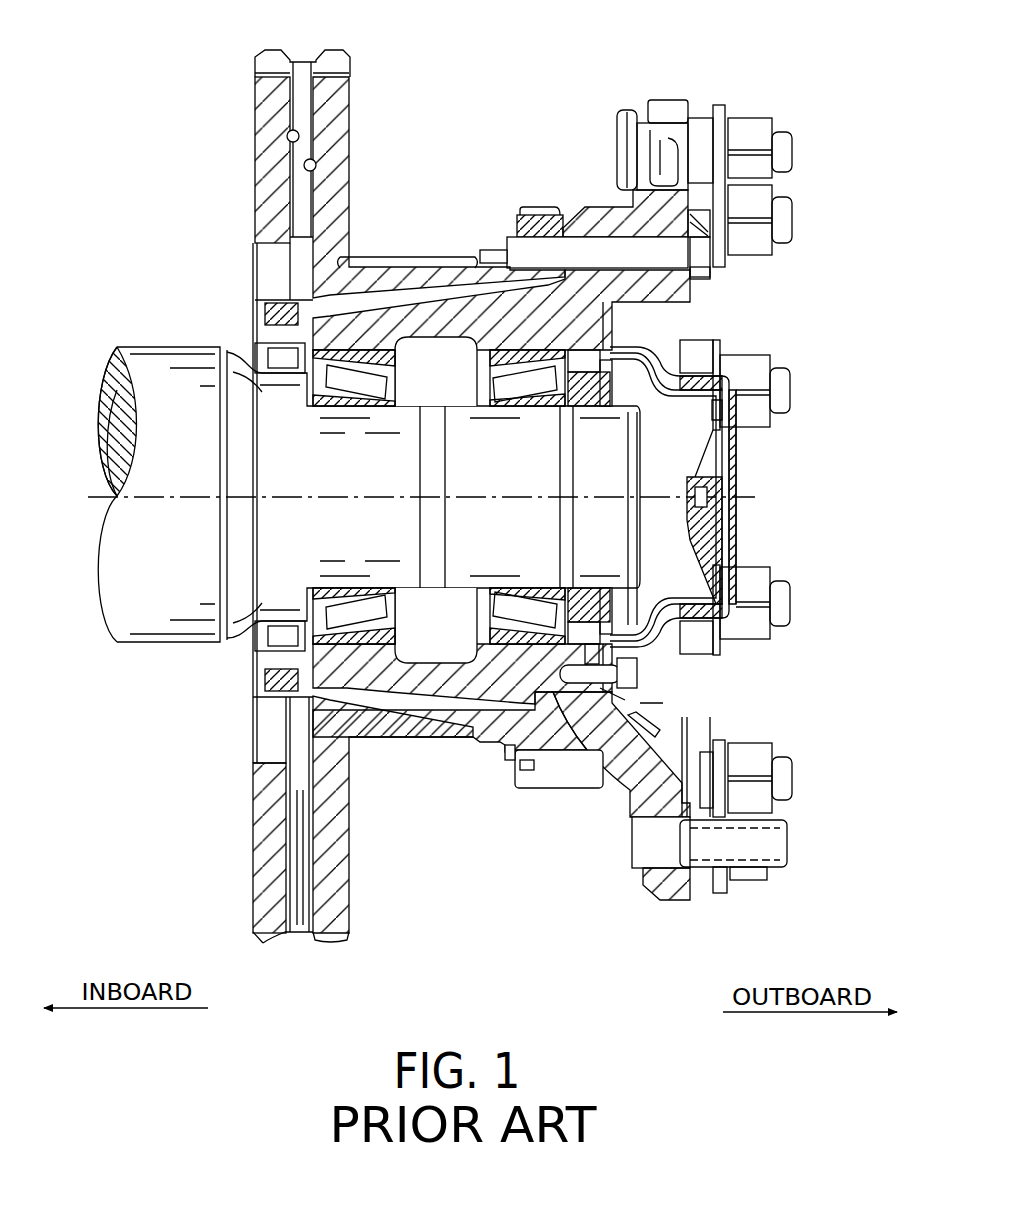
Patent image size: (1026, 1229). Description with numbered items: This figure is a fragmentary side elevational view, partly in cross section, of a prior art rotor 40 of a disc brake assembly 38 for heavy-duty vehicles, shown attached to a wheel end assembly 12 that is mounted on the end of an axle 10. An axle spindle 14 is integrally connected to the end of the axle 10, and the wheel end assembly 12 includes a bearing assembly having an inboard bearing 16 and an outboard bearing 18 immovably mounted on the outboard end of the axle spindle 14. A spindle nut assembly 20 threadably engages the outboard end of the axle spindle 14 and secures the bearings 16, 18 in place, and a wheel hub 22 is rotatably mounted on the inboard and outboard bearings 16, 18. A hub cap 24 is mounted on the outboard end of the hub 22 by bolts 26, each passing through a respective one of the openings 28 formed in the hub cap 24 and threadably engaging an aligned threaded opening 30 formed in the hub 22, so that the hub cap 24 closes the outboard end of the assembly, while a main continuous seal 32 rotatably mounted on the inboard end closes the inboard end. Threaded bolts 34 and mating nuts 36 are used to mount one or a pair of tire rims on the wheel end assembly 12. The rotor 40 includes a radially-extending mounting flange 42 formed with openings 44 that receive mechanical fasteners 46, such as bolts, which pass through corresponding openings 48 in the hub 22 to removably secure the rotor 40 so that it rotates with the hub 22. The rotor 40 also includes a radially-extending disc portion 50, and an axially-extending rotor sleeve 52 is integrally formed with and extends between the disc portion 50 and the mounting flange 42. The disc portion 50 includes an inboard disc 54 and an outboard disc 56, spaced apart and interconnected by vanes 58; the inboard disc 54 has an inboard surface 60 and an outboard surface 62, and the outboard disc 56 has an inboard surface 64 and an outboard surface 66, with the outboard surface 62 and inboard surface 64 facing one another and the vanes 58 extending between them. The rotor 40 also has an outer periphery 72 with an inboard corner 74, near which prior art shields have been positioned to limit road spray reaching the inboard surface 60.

The axle 10 is at (448, 493).
The wheel end assembly 12 is at (511, 479).
The axle spindle 14 is at (138, 346).
The inboard bearing 16 is at (360, 340).
The outboard bearing 18 is at (490, 337).
The spindle nut assembly 20 is at (622, 392).
The wheel hub 22 is at (692, 93).
The hub cap 24 is at (740, 543).
The bolts 26 is at (637, 673).
The openings 28 is at (630, 678).
The threaded openings 30 is at (593, 680).
The main continuous seal 32 is at (262, 653).
The threaded bolts 34 is at (705, 123).
The nuts 36 is at (757, 118).
The disc brake assembly 38 is at (418, 823).
The rotor 40 is at (358, 499).
The mounting flange 42 is at (548, 210).
The openings 44 is at (533, 248).
The mechanical fasteners 46 is at (717, 280).
The openings 48 is at (643, 240).
The disc portion 50 is at (332, 52).
The rotor sleeve 52 is at (445, 737).
The inboard disc 54 is at (263, 98).
The outboard disc 56 is at (340, 95).
The vanes 58 is at (297, 880).
The inboard surface 60 is at (255, 183).
The outboard surface 62 is at (293, 143).
The inboard surface 64 is at (305, 170).
The outboard surface 66 is at (348, 185).
The outer periphery 72 is at (265, 943).
The inboard corner 74 is at (255, 937).